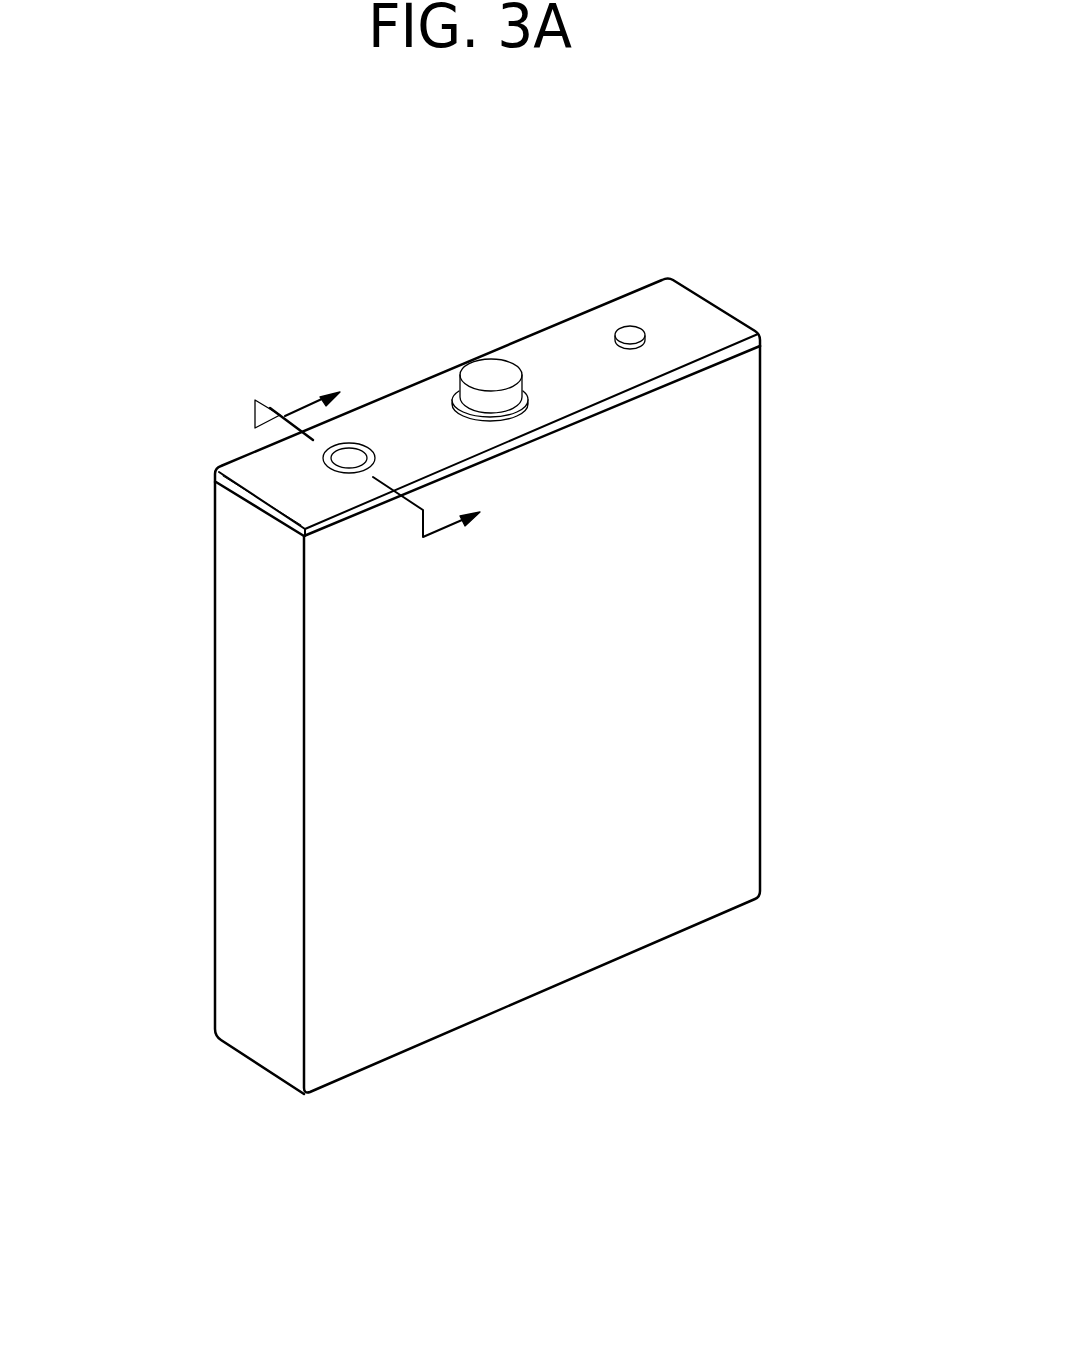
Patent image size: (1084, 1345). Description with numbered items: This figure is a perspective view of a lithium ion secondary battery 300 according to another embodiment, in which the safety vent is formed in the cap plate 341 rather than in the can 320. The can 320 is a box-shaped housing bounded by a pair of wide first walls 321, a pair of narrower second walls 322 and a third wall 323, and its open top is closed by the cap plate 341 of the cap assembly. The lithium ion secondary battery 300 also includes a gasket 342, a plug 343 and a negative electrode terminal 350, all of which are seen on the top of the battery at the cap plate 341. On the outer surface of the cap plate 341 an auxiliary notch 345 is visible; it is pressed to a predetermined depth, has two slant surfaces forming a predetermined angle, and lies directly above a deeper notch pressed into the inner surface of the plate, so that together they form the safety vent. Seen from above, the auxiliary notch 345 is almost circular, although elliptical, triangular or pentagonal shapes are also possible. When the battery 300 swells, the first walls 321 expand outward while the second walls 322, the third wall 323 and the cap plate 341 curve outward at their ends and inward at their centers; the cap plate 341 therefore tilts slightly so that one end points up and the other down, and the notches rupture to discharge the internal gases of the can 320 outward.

The lithium ion secondary battery 300 is at (507, 742).
The can 320 is at (487, 824).
The first wall 321 is at (417, 1005).
The second wall 322 is at (273, 1030).
The upper edge of can 323 is at (360, 1073).
The cap plate 341 is at (256, 470).
The gasket 342 is at (412, 399).
The plug 343 is at (628, 334).
The auxiliary notch 345 is at (333, 472).
The negative electrode terminal 350 is at (487, 368).